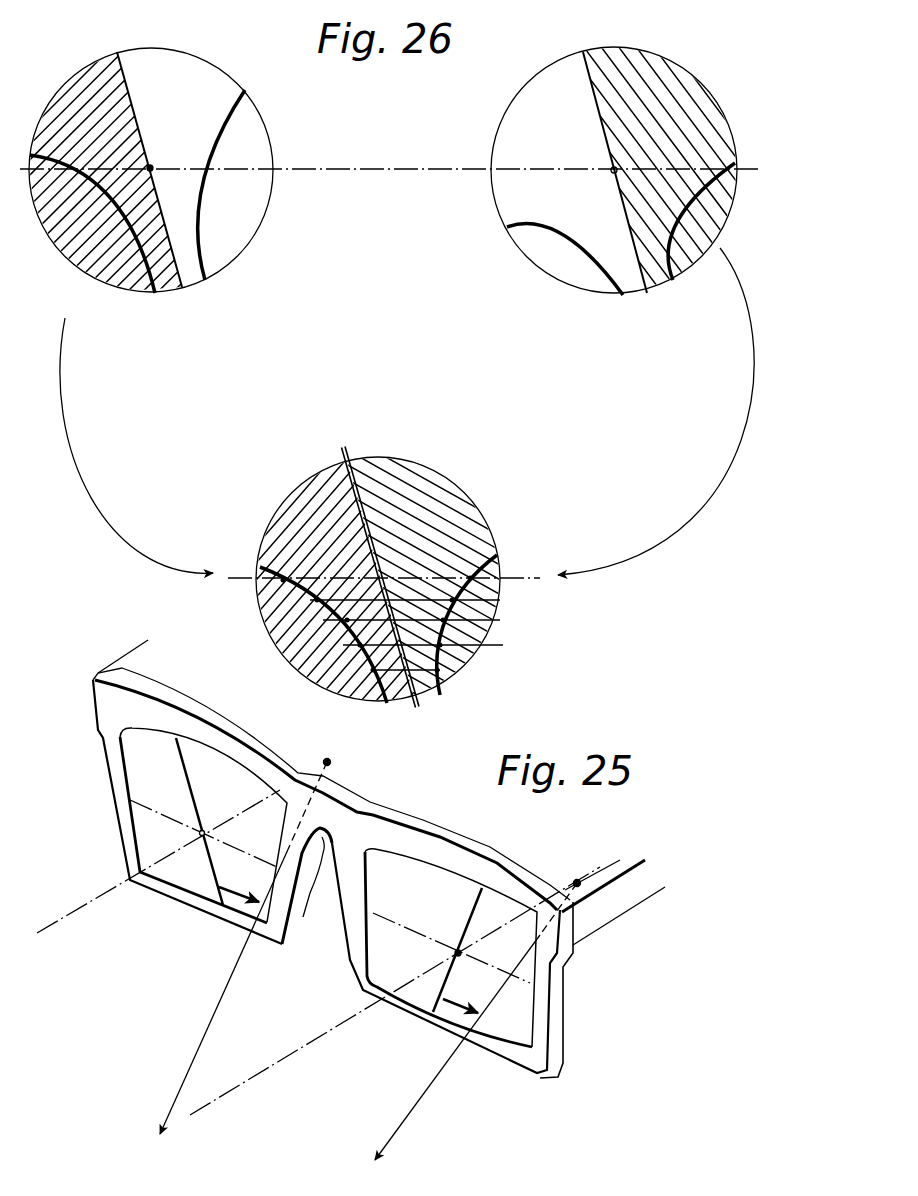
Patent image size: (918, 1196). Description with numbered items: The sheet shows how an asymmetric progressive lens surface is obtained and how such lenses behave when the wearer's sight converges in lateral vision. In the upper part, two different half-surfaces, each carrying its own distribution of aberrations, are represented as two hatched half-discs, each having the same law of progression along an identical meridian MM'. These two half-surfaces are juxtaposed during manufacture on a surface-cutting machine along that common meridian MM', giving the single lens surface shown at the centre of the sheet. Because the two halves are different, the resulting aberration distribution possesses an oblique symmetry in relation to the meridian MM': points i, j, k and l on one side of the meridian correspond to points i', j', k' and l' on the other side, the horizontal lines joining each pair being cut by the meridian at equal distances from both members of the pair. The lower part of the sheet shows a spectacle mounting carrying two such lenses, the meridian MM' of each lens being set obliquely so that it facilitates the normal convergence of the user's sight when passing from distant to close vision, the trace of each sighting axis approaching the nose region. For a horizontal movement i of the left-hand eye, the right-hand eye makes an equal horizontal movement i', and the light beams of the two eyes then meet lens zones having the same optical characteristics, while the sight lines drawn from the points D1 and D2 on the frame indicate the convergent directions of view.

In FIG. 26, the meridian upper end M is at (374, 367).
In FIG. 25, the meridian upper end M is at (316, 874).
In FIG. 26, the meridian lower end M' is at (421, 513).
In FIG. 25, the meridian lower end M' is at (311, 936).
In FIG. 26, the horizontal movement of left-hand eye i is at (380, 594).
In FIG. 25, the horizontal movement of left-hand eye i is at (460, 995).
In FIG. 26, the horizontal sighting position j is at (361, 620).
In FIG. 26, the horizontal sighting position k is at (375, 646).
In FIG. 26, the horizontal sighting position l is at (391, 672).
In FIG. 26, the horizontal movement of right-hand eye i' is at (451, 604).
In FIG. 25, the horizontal movement of right-hand eye i' is at (239, 883).
In FIG. 26, the symmetric horizontal sighting position j' is at (513, 593).
In FIG. 26, the symmetric horizontal sighting position k' is at (516, 628).
In FIG. 26, the symmetric horizontal sighting position l' is at (472, 660).
In FIG. 25, the reference point on frame top edge with sight line D1 is at (245, 935).
In FIG. 25, the reference point on frame top edge with sight line D2 is at (480, 1008).